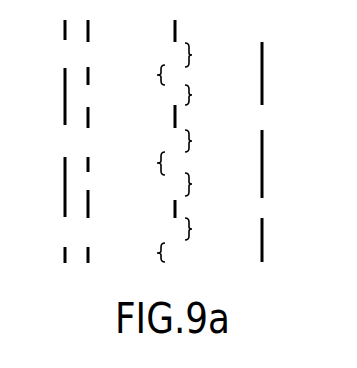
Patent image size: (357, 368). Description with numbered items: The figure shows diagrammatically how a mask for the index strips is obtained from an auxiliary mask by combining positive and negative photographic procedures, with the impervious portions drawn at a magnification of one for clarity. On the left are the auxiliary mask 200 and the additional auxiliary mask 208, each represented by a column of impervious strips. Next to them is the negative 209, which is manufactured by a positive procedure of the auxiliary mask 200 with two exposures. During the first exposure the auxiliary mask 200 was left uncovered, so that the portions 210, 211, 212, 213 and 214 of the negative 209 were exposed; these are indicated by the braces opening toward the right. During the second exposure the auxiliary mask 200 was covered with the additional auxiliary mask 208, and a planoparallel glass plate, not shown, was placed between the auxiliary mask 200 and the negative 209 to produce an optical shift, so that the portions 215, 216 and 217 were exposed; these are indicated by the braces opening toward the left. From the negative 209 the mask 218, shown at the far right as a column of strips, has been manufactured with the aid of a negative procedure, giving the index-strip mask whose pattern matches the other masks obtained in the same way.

The auxiliary mask 200 is at (88, 156).
The additional auxiliary mask 208 is at (66, 269).
The negative 209 is at (175, 156).
The exposed portion 210 is at (206, 55).
The exposed portion 211 is at (207, 97).
The exposed portion 212 is at (207, 142).
The exposed portion 213 is at (207, 186).
The exposed portion 214 is at (206, 230).
The exposed portion 215 is at (139, 77).
The exposed portion 216 is at (140, 165).
The exposed portion 217 is at (142, 255).
The mask 218 is at (257, 168).